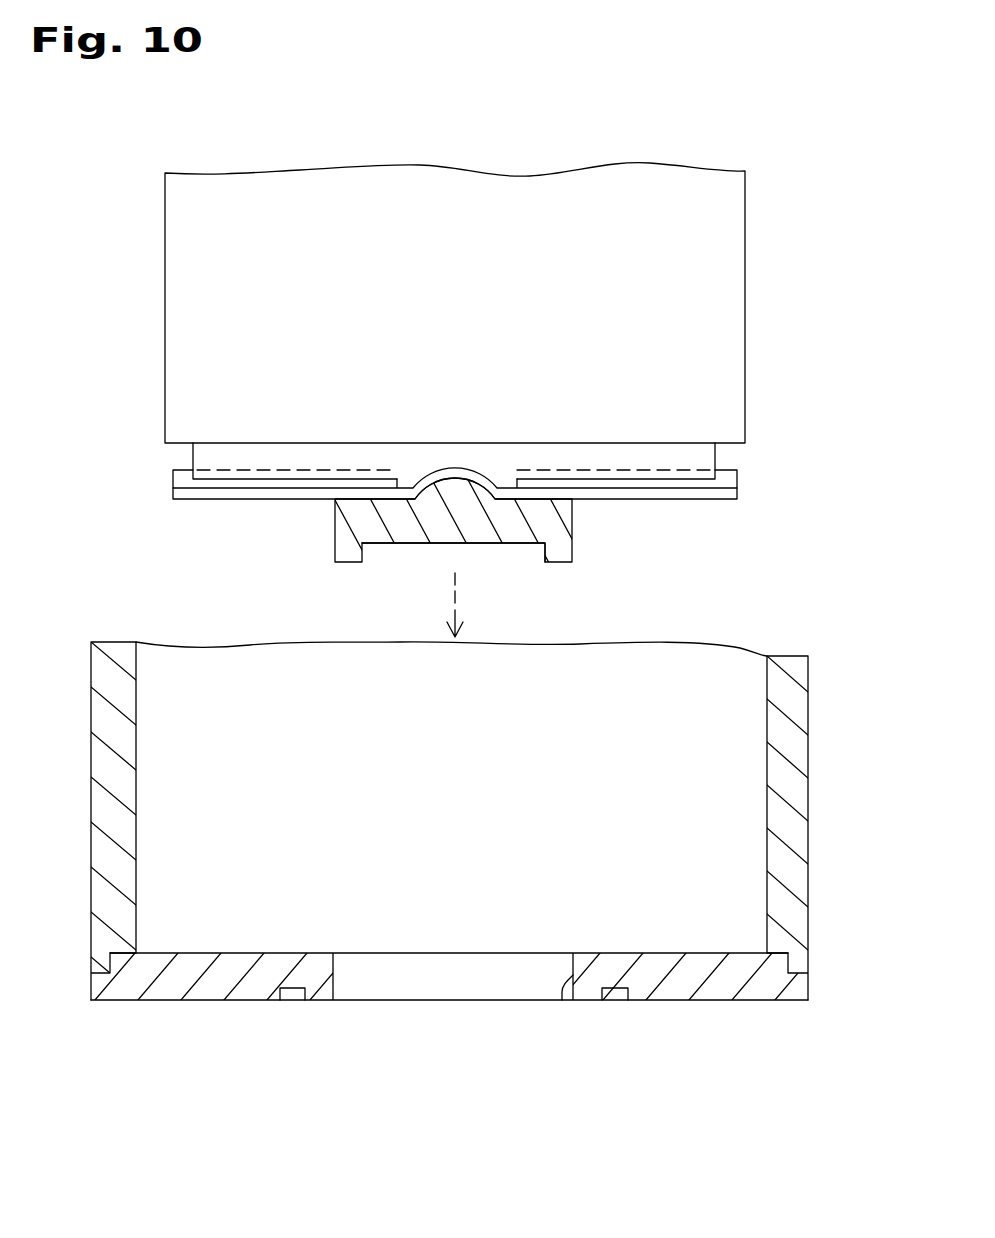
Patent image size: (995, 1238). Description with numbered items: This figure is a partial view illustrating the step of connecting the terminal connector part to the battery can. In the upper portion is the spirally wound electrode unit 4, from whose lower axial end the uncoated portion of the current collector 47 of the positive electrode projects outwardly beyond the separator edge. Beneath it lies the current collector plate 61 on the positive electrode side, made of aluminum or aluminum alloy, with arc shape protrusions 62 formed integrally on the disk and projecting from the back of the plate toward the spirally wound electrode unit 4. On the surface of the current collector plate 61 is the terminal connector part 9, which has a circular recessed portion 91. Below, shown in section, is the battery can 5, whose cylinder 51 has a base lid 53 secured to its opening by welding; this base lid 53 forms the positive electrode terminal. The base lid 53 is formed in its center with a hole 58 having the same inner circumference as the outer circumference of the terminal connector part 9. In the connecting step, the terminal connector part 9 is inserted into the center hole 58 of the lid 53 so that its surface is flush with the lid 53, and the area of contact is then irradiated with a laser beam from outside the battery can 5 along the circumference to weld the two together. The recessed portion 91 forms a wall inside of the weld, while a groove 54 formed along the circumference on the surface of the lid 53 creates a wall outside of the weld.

The spirally wound electrode unit 4 is at (476, 287).
The current collector of the positive electrode 47 is at (693, 453).
The arc shape protrusions 62 is at (742, 477).
The current collector plate 61 is at (713, 500).
The terminal connector part 9 is at (557, 528).
The circular recessed portion 91 is at (537, 563).
The battery can 5 is at (797, 682).
The cylinder 51 is at (800, 752).
The base lid 53 is at (737, 990).
The groove 54 is at (622, 1000).
The center hole 58 is at (563, 1000).